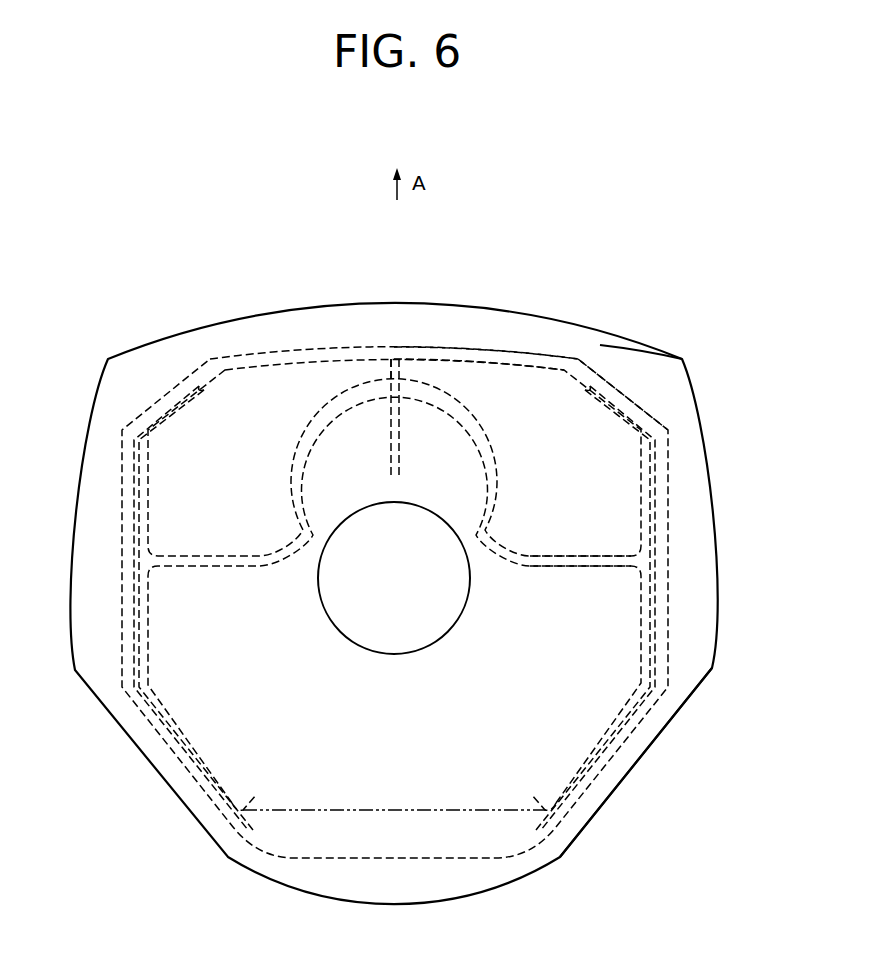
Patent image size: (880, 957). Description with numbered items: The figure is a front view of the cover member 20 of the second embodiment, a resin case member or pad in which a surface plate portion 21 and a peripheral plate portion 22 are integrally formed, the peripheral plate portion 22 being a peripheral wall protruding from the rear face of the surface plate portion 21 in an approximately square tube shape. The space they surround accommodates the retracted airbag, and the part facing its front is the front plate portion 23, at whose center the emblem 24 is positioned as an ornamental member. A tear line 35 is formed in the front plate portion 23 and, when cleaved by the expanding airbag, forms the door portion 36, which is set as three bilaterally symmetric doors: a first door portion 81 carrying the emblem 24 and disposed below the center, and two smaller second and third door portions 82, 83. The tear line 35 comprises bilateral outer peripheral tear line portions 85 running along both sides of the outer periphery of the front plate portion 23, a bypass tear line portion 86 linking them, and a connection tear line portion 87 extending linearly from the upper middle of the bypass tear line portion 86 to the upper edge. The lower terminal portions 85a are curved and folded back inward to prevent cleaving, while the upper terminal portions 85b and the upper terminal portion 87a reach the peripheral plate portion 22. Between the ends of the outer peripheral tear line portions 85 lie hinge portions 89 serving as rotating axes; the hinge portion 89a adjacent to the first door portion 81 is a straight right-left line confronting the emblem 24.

The cover member 20 is at (99, 227).
The surface plate portion 21 is at (547, 382).
The peripheral plate portion 22 is at (643, 407).
The front plate portion 23 is at (480, 380).
The emblem 24 is at (323, 615).
The tear line 35 is at (603, 555).
The door portion 36 is at (607, 707).
The first door portion 81 is at (193, 715).
The second door portion 82 is at (262, 388).
The third door portion 83 is at (515, 380).
The outer peripheral tear line portion 85 is at (140, 617).
The lower terminal portion 85a is at (251, 799).
The upper terminal portion 85b is at (204, 381).
The bypass tear line portion 86 is at (555, 555).
The connection tear line portion 87 is at (402, 373).
The upper terminal portion 87a is at (389, 368).
The hinge portion 89 is at (329, 370).
The hinge portion 89a is at (360, 811).